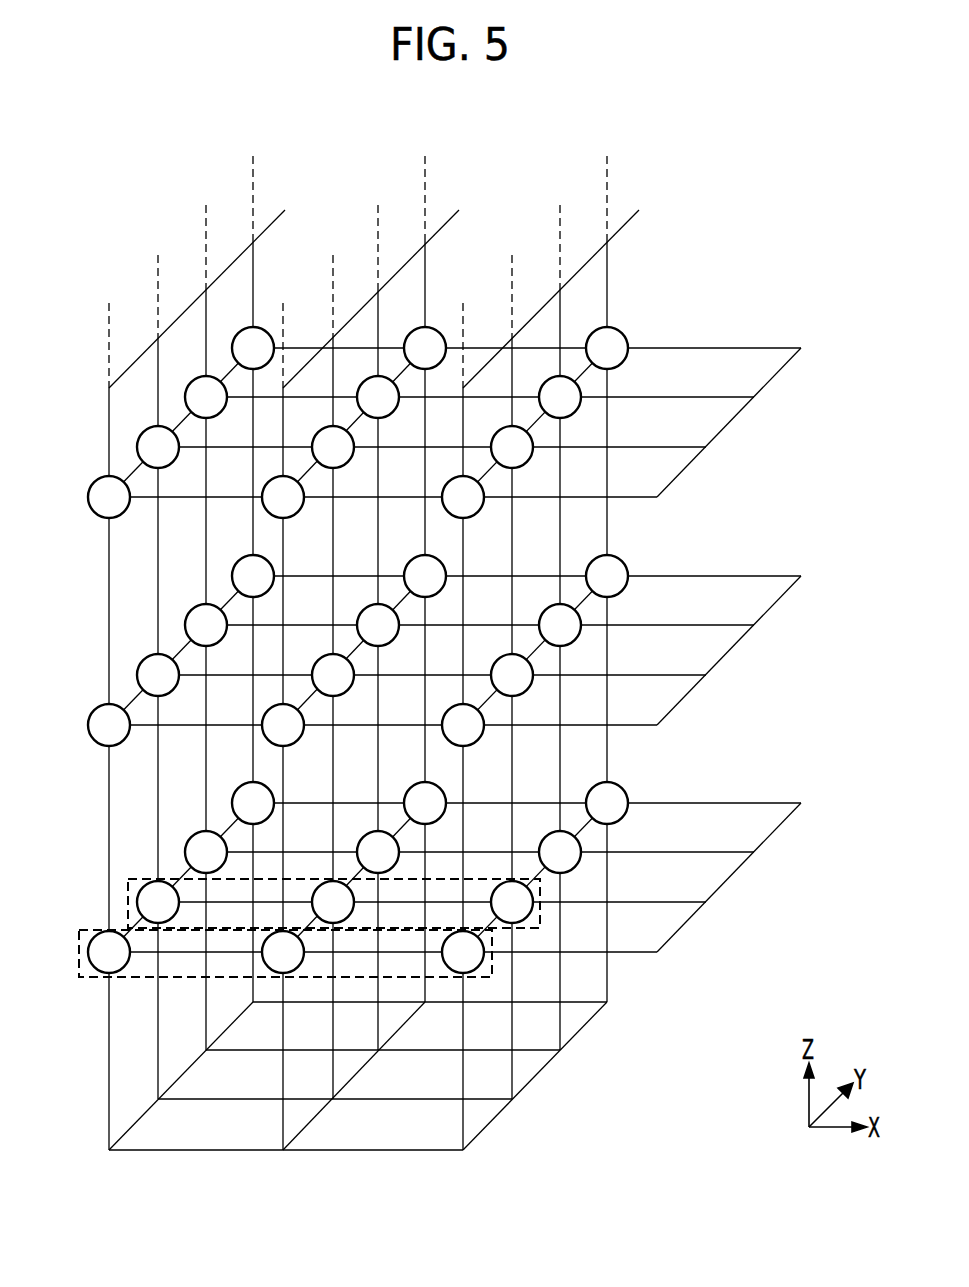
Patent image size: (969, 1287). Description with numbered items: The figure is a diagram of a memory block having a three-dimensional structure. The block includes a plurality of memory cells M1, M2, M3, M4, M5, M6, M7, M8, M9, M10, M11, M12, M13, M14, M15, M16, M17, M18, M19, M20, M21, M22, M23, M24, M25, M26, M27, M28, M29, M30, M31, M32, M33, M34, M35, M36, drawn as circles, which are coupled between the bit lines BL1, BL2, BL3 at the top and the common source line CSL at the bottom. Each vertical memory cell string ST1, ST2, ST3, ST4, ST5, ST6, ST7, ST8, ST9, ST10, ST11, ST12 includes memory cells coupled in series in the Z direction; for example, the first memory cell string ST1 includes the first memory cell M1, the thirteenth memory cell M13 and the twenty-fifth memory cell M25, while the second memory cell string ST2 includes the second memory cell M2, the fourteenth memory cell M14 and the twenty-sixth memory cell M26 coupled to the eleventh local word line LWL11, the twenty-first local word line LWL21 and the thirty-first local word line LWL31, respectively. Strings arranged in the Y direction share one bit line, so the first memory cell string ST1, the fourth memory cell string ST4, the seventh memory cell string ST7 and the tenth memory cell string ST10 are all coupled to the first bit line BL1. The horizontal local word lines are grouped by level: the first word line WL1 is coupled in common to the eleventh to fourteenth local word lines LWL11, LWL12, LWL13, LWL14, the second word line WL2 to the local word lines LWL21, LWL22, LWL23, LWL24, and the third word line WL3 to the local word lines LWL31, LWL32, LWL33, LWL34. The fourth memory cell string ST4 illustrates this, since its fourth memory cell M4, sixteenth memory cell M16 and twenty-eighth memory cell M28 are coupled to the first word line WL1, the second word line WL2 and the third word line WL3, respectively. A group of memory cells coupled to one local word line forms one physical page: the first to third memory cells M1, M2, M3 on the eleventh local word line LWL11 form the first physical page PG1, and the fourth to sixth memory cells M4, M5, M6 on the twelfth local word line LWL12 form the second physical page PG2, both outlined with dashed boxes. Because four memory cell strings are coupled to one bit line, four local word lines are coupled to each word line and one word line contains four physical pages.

The first memory cell M1 is at (109, 952).
The second memory cell M2 is at (283, 952).
The third memory cell M3 is at (463, 952).
The fourth memory cell M4 is at (158, 902).
The fifth memory cell M5 is at (333, 902).
The sixth memory cell M6 is at (512, 902).
The seventh memory cell M7 is at (206, 852).
The eighth memory cell M8 is at (378, 852).
The ninth memory cell M9 is at (560, 852).
The tenth memory cell M10 is at (253, 803).
The eleventh memory cell M11 is at (425, 803).
The twelfth memory cell M12 is at (607, 803).
The thirteenth memory cell M13 is at (109, 725).
The fourteenth memory cell M14 is at (283, 725).
The fifteenth memory cell M15 is at (463, 725).
The sixteenth memory cell M16 is at (158, 675).
The seventeenth memory cell M17 is at (333, 675).
The eighteenth memory cell M18 is at (512, 675).
The nineteenth memory cell M19 is at (206, 625).
The twentieth memory cell M20 is at (378, 625).
The twenty-first memory cell M21 is at (560, 625).
The twenty-second memory cell M22 is at (253, 576).
The twenty-third memory cell M23 is at (425, 576).
The twenty-fourth memory cell M24 is at (607, 576).
The 25-th memory cell M25 is at (109, 497).
The 26-th memory cell M26 is at (283, 497).
The 27-th memory cell M27 is at (463, 497).
The 28-th memory cell M28 is at (158, 447).
The 29-th memory cell M29 is at (333, 447).
The 30-th memory cell M30 is at (512, 447).
The 31-st memory cell M31 is at (206, 397).
The 32-nd memory cell M32 is at (378, 397).
The 33-rd memory cell M33 is at (560, 397).
The 34-th memory cell M34 is at (253, 348).
The 35-th memory cell M35 is at (425, 348).
The 36-th memory cell M36 is at (607, 348).
The first memory cell string ST1 is at (109, 712).
The second memory cell string ST2 is at (283, 712).
The third memory cell string ST3 is at (463, 712).
The fourth memory cell string ST4 is at (158, 662).
The fifth memory cell string ST5 is at (333, 662).
The sixth memory cell string ST6 is at (512, 662).
The seventh memory cell string ST7 is at (206, 613).
The eighth memory cell string ST8 is at (378, 613).
The ninth memory cell string ST9 is at (560, 613).
The tenth memory cell string ST10 is at (253, 564).
The eleventh memory cell string ST11 is at (425, 564).
The twelfth memory cell string ST12 is at (607, 564).
The first bit line BL1 is at (205, 282).
The second bit line BL2 is at (379, 282).
The third bit line BL3 is at (559, 282).
The eleventh local word line LWL11 is at (414, 950).
The twelfth local word line LWL12 is at (463, 900).
The thirteenth local word line LWL13 is at (511, 850).
The fourteenth local word line LWL14 is at (558, 801).
The 21-st local word line LWL21 is at (414, 723).
The 22-nd local word line LWL22 is at (463, 673).
The 23-rd local word line LWL23 is at (511, 623).
The 24-th local word line LWL24 is at (558, 574).
The 31-st local word line LWL31 is at (414, 495).
The 32-nd local word line LWL32 is at (463, 445).
The 33-rd local word line LWL33 is at (511, 395).
The 34-th local word line LWL34 is at (558, 346).
The first word line WL1 is at (731, 877).
The second word line WL2 is at (731, 650).
The third word line WL3 is at (731, 422).
The first physical page PG1 is at (79, 943).
The second physical page PG2 is at (128, 893).
The common source line CSL is at (537, 1075).